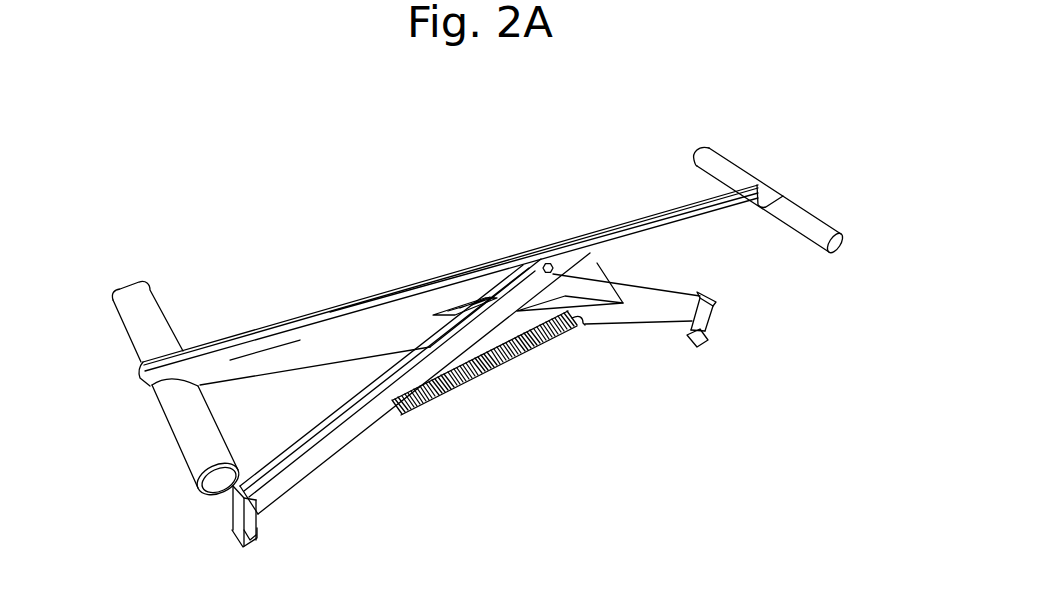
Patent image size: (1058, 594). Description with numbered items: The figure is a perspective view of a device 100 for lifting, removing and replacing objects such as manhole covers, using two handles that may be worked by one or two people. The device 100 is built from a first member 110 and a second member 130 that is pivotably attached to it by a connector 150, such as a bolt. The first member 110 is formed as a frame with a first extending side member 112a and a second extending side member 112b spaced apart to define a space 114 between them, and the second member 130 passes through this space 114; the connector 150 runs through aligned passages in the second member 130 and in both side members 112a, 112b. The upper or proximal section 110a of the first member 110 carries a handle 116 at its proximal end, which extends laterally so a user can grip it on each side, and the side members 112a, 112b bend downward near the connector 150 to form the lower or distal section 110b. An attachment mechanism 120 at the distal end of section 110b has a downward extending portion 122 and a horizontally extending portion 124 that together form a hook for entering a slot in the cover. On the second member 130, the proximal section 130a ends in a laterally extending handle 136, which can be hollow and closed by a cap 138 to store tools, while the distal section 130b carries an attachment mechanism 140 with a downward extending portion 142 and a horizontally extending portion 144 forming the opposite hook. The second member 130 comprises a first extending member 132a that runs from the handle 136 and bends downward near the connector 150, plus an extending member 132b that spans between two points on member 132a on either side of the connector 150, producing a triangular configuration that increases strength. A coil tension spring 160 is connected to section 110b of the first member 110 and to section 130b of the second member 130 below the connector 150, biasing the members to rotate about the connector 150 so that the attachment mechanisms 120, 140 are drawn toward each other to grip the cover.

The device 100 is at (790, 100).
The first member 110 is at (683, 250).
The first, upper or proximal section 110a is at (622, 203).
The second, lower or distal section 110b is at (347, 465).
The first extending side member 112a is at (273, 477).
The second extending side member 112b is at (346, 413).
The space 114 is at (407, 356).
The handle 116 is at (817, 208).
The attachment mechanism 120 is at (217, 508).
The generally downward extending portion 122 is at (233, 535).
The generally horizontally extending portion 124 is at (300, 543).
The second member 130 is at (322, 300).
The first, upper or proximal section 130a is at (254, 322).
The second, lower or distal section 130b is at (655, 338).
The first extending member 132a is at (467, 280).
The extending member 132b is at (592, 315).
The handle 136 is at (130, 290).
The cap 138 is at (217, 475).
The attachment mechanism 140 is at (725, 305).
The downward extending portion 142 is at (710, 330).
The horizontally extending portion 144 is at (703, 350).
The connector 150 is at (548, 262).
The coil tension spring 160 is at (507, 403).